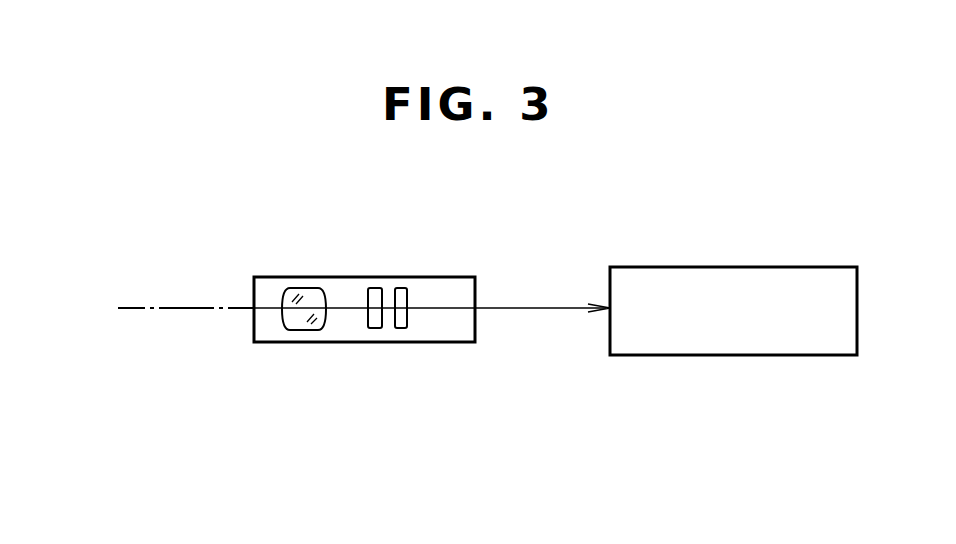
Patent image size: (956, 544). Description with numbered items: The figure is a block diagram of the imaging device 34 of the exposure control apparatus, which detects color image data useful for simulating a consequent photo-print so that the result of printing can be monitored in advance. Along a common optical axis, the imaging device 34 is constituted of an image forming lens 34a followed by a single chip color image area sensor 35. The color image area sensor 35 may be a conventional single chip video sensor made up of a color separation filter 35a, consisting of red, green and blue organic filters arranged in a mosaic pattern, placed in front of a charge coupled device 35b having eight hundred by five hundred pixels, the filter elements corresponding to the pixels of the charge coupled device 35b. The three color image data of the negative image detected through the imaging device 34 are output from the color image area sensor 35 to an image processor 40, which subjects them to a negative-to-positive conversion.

The imaging device 34 is at (428, 252).
The image forming lens 34a is at (310, 288).
The color image area sensor 35 is at (404, 384).
The color separation filter 35a is at (372, 328).
The charge coupled device 35b is at (440, 353).
The image processor 40 is at (735, 266).